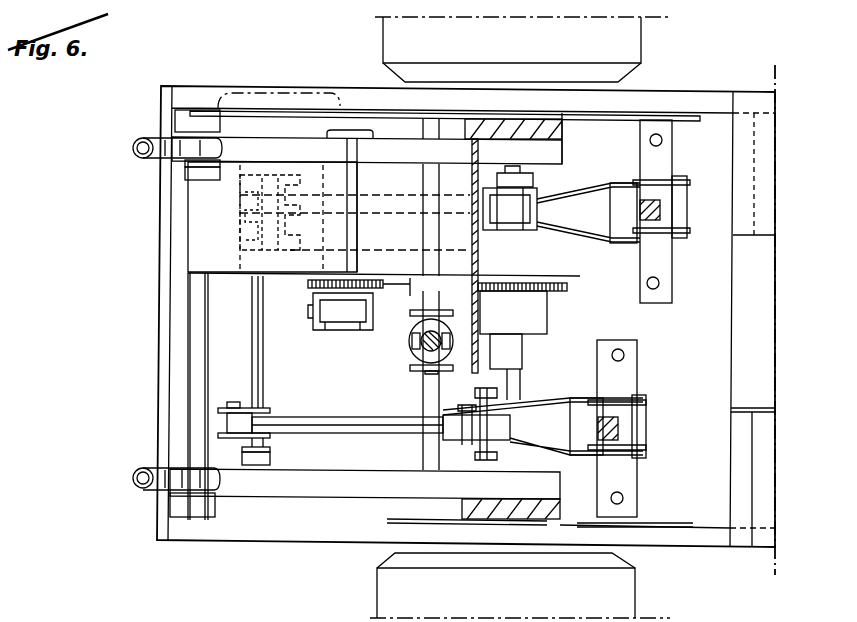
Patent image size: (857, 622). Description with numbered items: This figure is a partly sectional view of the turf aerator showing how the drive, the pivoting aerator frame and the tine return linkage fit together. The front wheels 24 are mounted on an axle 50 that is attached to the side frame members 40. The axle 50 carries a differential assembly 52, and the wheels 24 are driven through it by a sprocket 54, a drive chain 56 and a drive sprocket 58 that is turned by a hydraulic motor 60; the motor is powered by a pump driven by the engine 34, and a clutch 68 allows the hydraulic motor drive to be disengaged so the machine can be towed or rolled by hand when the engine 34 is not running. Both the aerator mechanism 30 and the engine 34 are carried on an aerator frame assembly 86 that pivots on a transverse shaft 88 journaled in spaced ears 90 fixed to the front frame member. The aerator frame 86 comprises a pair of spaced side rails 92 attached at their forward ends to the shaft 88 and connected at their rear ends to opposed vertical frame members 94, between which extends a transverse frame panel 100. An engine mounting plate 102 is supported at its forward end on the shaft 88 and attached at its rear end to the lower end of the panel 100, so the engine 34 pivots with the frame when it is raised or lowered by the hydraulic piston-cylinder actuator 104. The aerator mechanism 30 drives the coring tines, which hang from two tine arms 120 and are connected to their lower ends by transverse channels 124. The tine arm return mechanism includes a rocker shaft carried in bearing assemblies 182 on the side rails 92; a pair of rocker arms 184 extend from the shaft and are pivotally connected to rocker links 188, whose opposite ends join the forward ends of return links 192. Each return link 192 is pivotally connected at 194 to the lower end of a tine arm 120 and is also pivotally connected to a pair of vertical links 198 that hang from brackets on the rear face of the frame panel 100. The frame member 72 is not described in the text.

The front wheels 24 is at (632, 55).
The aerator mechanism 30 is at (132, 478).
The engine 34 is at (266, 86).
The side frame members 40 is at (715, 95).
The axle 50 is at (515, 378).
The differential assembly 52 is at (530, 320).
The sprocket 54 is at (567, 287).
The drive chain 56 is at (415, 305).
The drive sprocket 58 is at (310, 285).
The hydraulic motor 60 is at (358, 138).
The clutch 68 is at (320, 314).
The frame member 72 is at (760, 410).
The aerator frame assembly 86 is at (330, 488).
The transverse shaft 88 is at (190, 378).
The spaced ears 90 is at (183, 118).
The side rails 92 is at (348, 132).
The vertical frame members 94 is at (487, 118).
The transverse frame panel 100 is at (470, 243).
The engine mounting plate 102 is at (200, 238).
The hydraulic piston-cylinder actuator 104 is at (410, 343).
The tine arms 120 is at (664, 212).
The transverse channels 124 is at (672, 284).
The bearing assemblies 182 is at (300, 164).
The rocker arms 184 is at (260, 236).
The rocker links 188 is at (390, 198).
The return links 192 is at (568, 186).
The pivotal connection of return link to tine arm 194 is at (684, 180).
The vertical links 198 is at (540, 170).